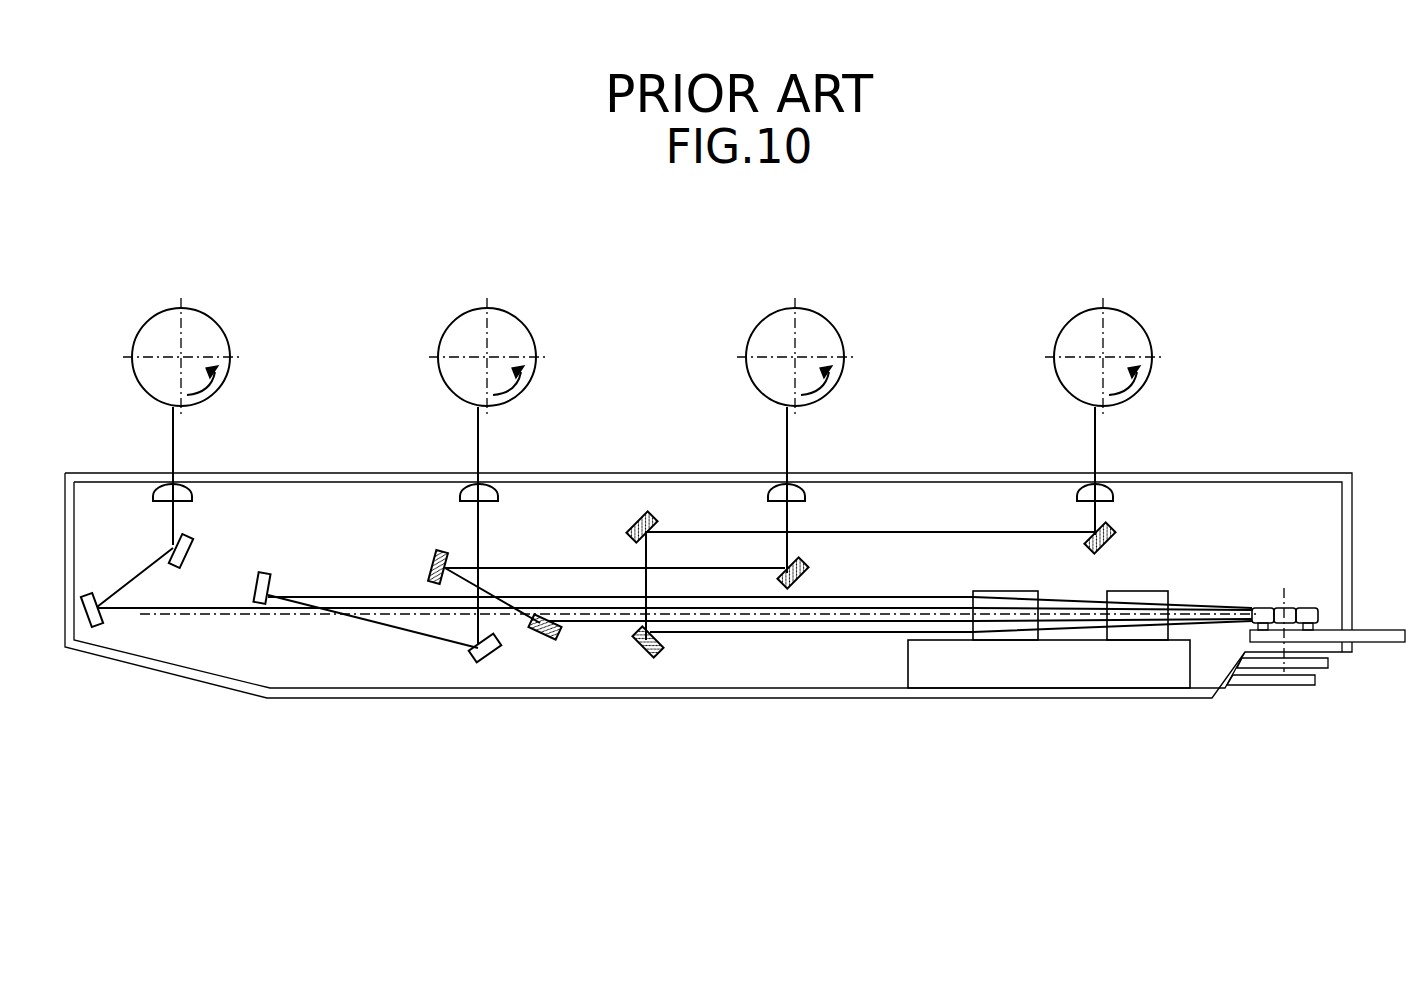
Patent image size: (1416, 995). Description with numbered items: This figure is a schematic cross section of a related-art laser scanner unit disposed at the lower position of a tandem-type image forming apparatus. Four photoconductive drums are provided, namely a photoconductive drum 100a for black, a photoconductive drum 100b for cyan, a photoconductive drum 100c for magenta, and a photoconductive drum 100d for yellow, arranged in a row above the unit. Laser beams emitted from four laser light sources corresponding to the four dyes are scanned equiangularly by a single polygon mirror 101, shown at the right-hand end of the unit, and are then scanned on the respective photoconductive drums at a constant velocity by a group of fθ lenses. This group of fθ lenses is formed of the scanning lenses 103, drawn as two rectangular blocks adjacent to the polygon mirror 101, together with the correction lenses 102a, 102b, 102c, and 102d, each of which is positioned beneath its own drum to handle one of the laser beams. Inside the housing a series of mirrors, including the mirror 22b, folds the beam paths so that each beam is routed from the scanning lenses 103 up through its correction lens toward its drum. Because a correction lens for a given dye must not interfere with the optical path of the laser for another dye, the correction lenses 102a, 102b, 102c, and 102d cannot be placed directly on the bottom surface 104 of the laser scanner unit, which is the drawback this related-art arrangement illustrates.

The photoconductive drum for black 100a is at (215, 323).
The photoconductive drum for cyan 100b is at (521, 323).
The photoconductive drum for magenta 100c is at (829, 323).
The photoconductive drum for yellow 100d is at (1137, 323).
The correction lens 102a is at (160, 488).
The correction lens 102b is at (466, 488).
The correction lens 102c is at (774, 488).
The correction lens 102d is at (1082, 488).
The reflecting mirror 22b is at (470, 657).
The scanning lens 103 is at (1038, 591).
The polygon mirror 101 is at (1283, 607).
The bottom surface 104 is at (747, 688).